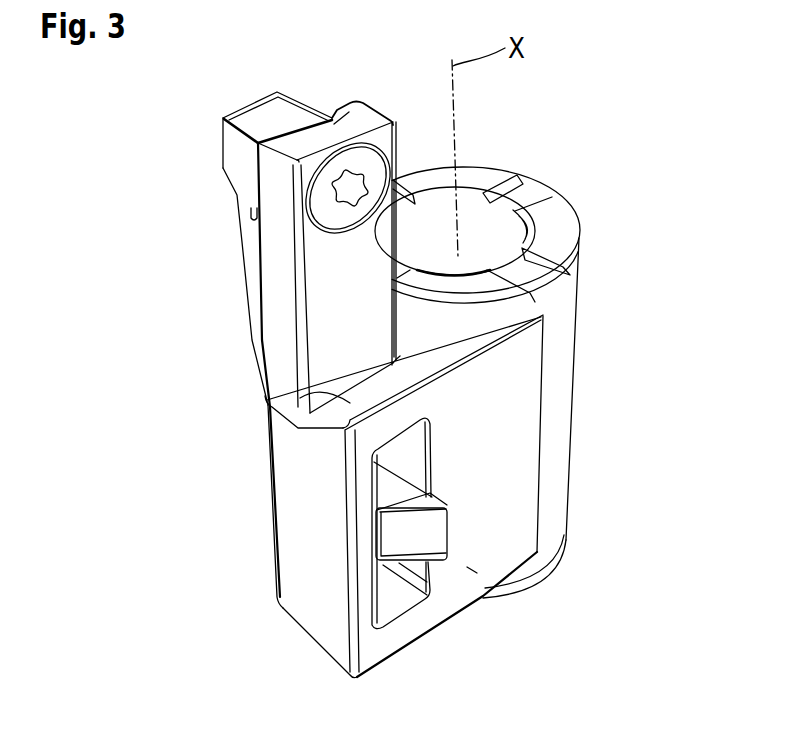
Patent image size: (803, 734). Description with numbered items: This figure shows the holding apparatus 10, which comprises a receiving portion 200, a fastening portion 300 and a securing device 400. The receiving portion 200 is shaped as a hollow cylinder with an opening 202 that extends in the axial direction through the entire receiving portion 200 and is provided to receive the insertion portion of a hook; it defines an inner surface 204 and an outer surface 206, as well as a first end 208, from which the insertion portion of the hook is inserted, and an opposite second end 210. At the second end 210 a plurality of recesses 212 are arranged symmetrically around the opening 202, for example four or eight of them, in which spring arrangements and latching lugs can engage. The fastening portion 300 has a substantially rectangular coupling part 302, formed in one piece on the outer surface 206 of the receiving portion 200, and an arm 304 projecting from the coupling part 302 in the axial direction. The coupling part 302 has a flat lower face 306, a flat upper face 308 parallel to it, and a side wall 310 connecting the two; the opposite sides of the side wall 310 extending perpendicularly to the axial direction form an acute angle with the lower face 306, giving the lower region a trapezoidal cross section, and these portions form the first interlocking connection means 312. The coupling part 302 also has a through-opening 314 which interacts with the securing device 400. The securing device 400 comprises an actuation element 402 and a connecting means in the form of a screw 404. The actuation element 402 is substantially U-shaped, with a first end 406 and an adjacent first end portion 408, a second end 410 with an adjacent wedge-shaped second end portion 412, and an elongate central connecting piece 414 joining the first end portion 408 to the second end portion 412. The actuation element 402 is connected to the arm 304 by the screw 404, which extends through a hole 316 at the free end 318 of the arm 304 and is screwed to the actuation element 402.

The holding apparatus 10 is at (628, 145).
The receiving portion 200 is at (552, 367).
The opening 202 is at (434, 213).
The inner surface 204 is at (505, 242).
The outer surface 206 is at (567, 430).
The first end 208 is at (528, 590).
The second end 210 is at (570, 252).
The recesses 212 is at (523, 202).
The fastening portion 300 is at (300, 513).
The coupling part 302 is at (510, 500).
The arm 304 is at (287, 320).
The lower face 306 is at (472, 574).
The upper face 308 is at (268, 558).
The side wall 310 is at (312, 603).
The first interlocking connection means 312 is at (278, 412).
The through-opening 314 is at (398, 597).
The hole 316 is at (312, 222).
The free end 318 is at (330, 117).
The securing device 400 is at (246, 153).
The actuation element 402 is at (230, 198).
The screw 404 is at (365, 115).
The first end 406 is at (282, 120).
The first end portion 408 is at (236, 167).
The second end 410 is at (316, 592).
The second end portion 412 is at (385, 488).
The central connecting piece 414 is at (252, 363).